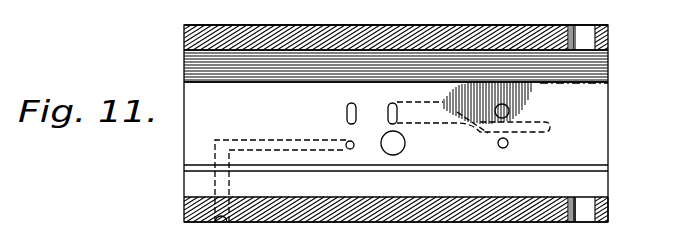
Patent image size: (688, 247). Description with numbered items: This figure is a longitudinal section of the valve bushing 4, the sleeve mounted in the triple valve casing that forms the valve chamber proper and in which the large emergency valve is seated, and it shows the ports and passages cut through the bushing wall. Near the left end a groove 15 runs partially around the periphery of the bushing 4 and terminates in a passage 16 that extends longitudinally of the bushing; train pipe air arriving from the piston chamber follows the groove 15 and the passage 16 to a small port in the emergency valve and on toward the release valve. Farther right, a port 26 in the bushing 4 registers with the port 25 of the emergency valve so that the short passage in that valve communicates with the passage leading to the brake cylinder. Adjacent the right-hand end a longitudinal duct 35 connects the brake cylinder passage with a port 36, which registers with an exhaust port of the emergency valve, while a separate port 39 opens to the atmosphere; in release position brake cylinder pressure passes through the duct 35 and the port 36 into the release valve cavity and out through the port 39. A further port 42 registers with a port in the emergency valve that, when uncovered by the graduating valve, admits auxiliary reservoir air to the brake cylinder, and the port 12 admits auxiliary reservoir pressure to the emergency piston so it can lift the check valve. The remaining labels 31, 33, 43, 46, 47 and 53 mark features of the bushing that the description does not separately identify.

The valve bushing 4 is at (538, 31).
The port 12 is at (404, 143).
The groove 15 is at (222, 223).
The passage 16 is at (254, 146).
The port 25 is at (396, 12).
The port 26 is at (508, 143).
The strip 31 is at (396, 123).
The strip 33 is at (396, 41).
The longitudinal duct 35 is at (471, 123).
The port 36 is at (402, 108).
The port 39 is at (347, 113).
The port 42 is at (516, 104).
The bottom wall 43 is at (292, 234).
The rib 46 is at (547, 222).
The bottom wall 47 is at (504, 234).
The end wall 53 is at (626, 222).